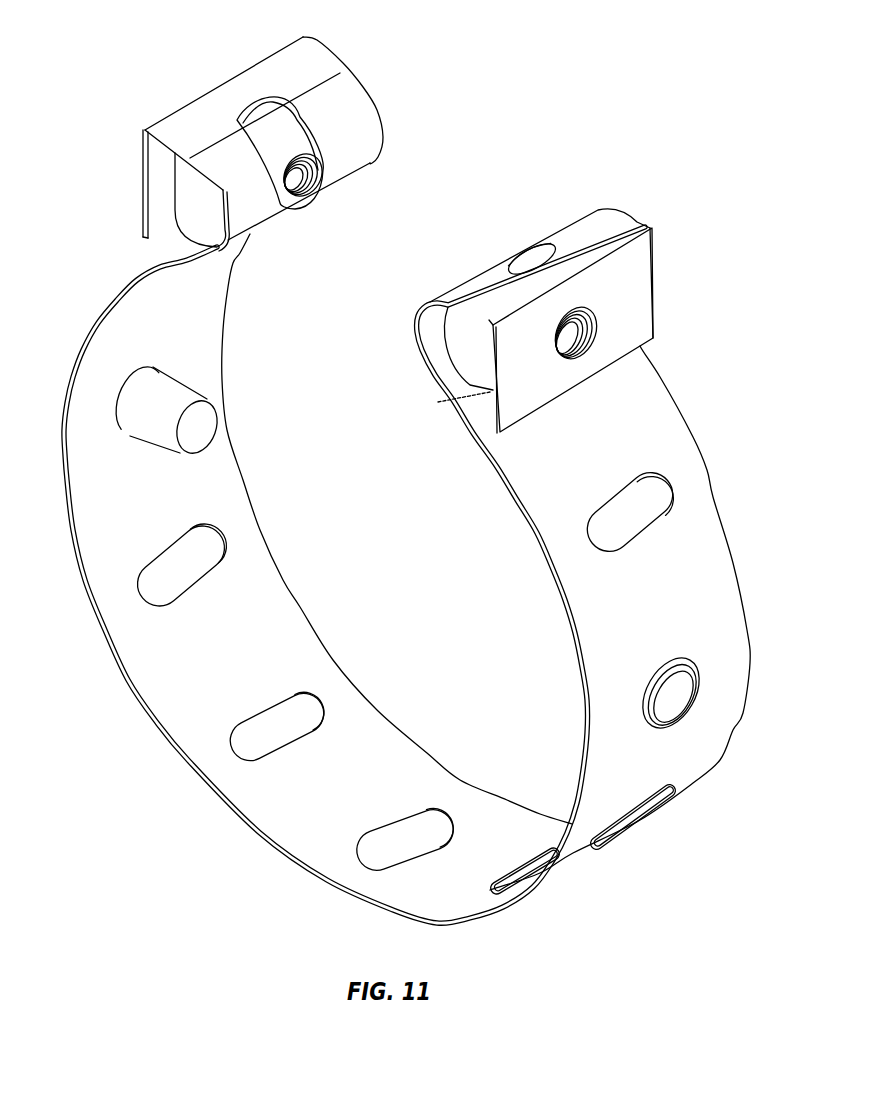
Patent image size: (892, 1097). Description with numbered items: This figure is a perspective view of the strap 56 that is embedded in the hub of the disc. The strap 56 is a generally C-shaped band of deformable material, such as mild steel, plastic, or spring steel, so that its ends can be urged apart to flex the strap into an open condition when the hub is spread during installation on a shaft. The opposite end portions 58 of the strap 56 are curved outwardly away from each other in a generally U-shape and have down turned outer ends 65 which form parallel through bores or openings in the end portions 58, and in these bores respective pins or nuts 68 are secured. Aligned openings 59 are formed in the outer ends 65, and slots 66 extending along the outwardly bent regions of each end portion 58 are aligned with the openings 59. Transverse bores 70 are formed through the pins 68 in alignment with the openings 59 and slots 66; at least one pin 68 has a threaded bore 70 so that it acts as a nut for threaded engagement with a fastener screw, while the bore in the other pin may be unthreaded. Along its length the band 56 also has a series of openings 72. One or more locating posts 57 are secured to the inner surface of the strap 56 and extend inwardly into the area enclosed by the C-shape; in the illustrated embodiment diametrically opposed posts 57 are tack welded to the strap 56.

The strap 56 is at (715, 481).
The locating post 57 is at (140, 432).
The end portion 58 is at (313, 63).
The opening 59 is at (598, 323).
The down turned outer end 65 is at (157, 190).
The slot 66 is at (257, 108).
The pin 68 is at (200, 222).
The transverse bore 70 is at (313, 193).
The opening 72 is at (670, 521).